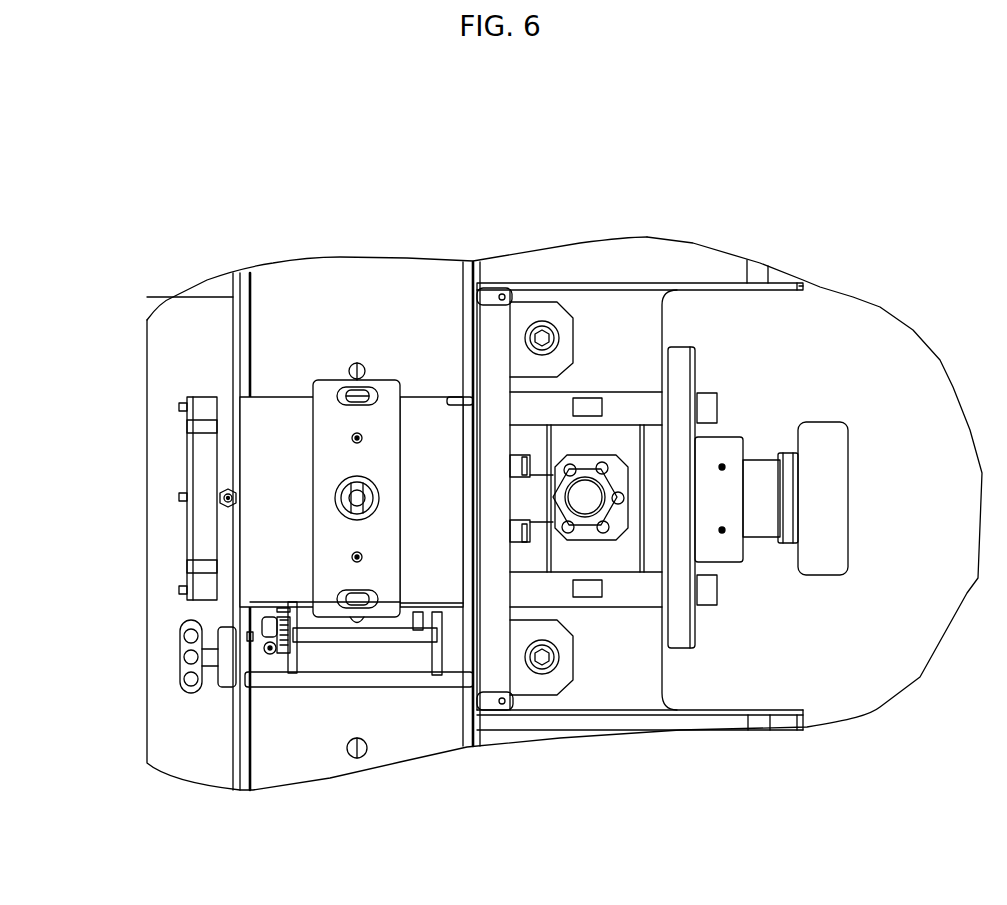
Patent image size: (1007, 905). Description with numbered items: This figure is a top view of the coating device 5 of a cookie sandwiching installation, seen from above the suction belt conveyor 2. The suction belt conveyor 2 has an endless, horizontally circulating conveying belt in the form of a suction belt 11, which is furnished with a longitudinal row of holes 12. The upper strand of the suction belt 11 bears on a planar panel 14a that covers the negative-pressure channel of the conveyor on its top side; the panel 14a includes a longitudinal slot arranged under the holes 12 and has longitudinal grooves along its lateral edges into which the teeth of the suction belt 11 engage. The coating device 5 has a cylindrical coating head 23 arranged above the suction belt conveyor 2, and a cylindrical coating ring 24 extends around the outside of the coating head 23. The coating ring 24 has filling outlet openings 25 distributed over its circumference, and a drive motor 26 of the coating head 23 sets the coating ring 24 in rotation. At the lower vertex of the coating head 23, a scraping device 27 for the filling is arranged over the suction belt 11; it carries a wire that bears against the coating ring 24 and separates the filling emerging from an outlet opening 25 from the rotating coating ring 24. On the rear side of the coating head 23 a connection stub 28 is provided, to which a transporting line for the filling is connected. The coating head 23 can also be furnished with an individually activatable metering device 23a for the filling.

The suction belt conveyor 2 is at (207, 715).
The coating device 5 is at (768, 254).
The suction belt 11 is at (303, 265).
The holes 12 is at (352, 760).
The panel 14a is at (237, 268).
The coating head 23 is at (260, 537).
The metering device 23a is at (723, 447).
The coating ring 24 is at (333, 455).
The filling outlet openings 25 is at (368, 392).
The drive motor 26 is at (617, 550).
The scraping device 27 is at (388, 637).
The connection stub 28 is at (835, 473).